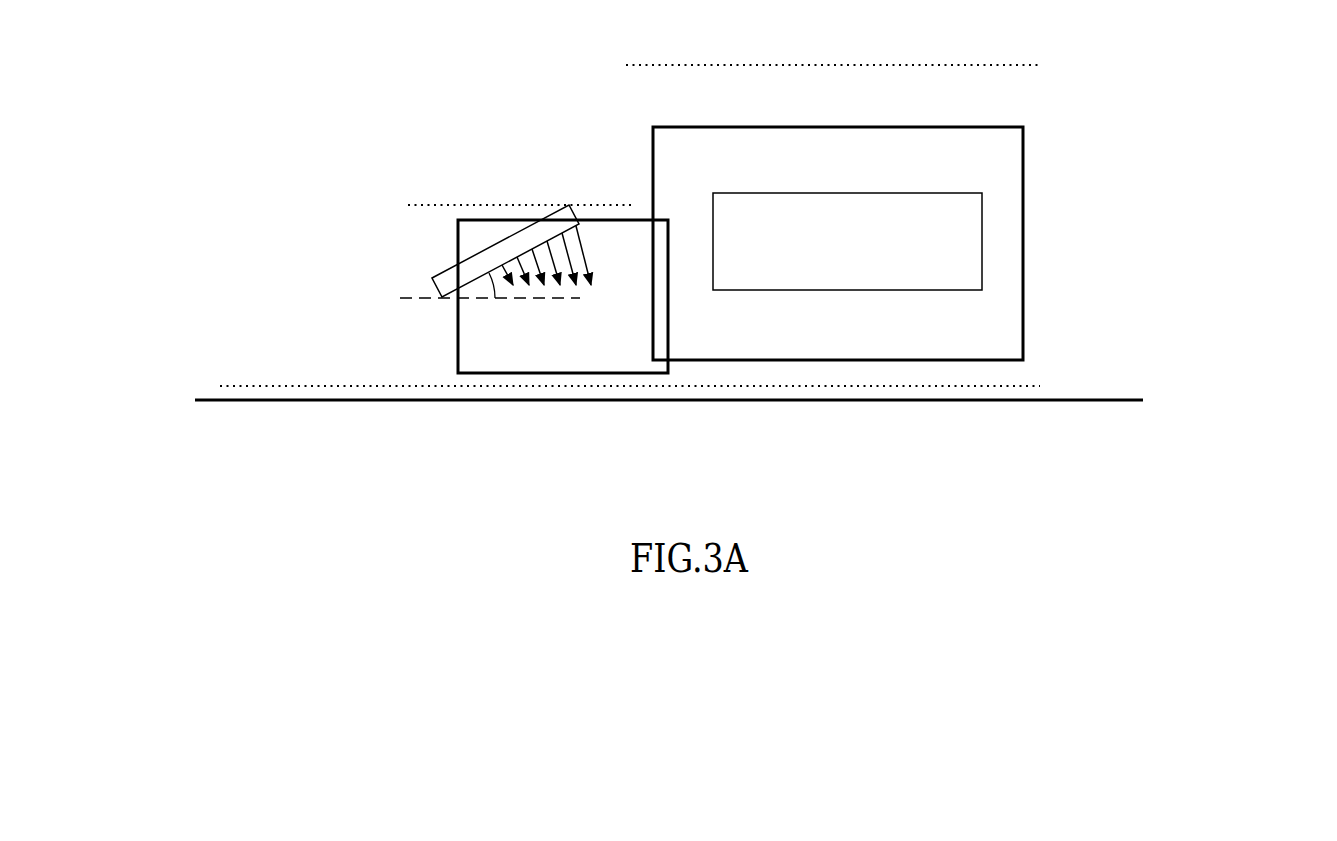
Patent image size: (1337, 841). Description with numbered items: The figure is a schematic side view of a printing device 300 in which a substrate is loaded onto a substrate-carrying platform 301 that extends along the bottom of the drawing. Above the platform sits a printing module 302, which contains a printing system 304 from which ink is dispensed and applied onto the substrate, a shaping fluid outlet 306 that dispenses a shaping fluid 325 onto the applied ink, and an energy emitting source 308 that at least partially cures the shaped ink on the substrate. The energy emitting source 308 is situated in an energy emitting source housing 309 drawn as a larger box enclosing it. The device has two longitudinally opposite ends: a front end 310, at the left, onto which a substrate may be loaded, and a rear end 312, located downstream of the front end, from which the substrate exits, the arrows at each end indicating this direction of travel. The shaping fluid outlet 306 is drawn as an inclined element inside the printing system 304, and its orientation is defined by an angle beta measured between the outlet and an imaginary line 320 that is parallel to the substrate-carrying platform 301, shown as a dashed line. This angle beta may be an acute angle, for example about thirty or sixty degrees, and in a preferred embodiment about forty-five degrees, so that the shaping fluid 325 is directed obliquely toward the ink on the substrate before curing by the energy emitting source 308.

The printing device 300 is at (276, 196).
The substrate-carrying platform 301 is at (1107, 398).
The printing module 302 is at (960, 65).
The printing system 304 is at (502, 218).
The shaping fluid outlet 306 is at (432, 278).
The energy emitting source 308 is at (888, 193).
The energy emitting source housing 309 is at (930, 127).
The front end 310 is at (168, 401).
The rear end 312 is at (1333, 399).
The imaginary line 320 is at (541, 300).
The shaping fluid 325 is at (575, 256).